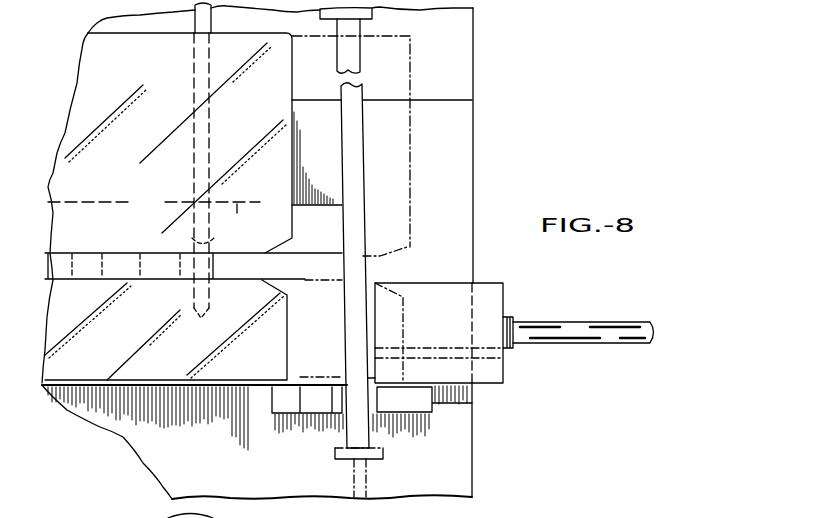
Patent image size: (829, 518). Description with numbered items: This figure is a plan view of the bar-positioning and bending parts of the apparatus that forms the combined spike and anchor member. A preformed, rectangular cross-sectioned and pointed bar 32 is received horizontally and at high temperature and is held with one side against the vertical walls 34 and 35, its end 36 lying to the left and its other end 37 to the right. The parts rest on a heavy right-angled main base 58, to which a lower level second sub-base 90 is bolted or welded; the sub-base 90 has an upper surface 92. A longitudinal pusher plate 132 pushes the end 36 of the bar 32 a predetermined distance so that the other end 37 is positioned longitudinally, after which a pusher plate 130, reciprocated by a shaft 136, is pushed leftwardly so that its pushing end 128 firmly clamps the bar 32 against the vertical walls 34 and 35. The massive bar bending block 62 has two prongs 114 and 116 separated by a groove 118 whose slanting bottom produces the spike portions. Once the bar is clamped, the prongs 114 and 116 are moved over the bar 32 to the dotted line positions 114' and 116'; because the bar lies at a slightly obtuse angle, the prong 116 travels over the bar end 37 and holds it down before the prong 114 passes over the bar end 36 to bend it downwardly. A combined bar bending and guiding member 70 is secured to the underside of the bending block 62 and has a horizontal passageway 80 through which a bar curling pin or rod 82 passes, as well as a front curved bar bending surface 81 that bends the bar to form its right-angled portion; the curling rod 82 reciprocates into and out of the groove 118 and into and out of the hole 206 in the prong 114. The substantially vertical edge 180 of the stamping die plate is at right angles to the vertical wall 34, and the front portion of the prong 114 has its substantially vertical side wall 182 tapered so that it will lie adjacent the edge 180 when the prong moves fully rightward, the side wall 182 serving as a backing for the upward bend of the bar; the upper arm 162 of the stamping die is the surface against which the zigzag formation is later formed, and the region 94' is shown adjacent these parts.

The main base 58 is at (477, 57).
The prong 116 is at (201, 143).
The dotted line position of prong 116 116' is at (376, 146).
The vertical wall 35 is at (342, 186).
The other end of bar 37 is at (352, 56).
The bar 32 is at (358, 243).
The vertical wall 34 is at (346, 350).
The end of bar 36 is at (350, 432).
The bar curling pin or rod 82 is at (202, 21).
The horizontal hole or passageway 80 is at (212, 83).
The hole in prong 114 206 is at (190, 298).
The front curved bar bending surface 81 is at (230, 228).
The combined bar bending and guiding member 70 is at (113, 200).
The groove 118 is at (121, 268).
The prong 114 is at (188, 330).
The dotted line position of prong 114 114' is at (380, 331).
The side wall of prong 114 182 is at (138, 380).
The pusher plate 130 is at (493, 310).
The pushing end of pusher plate 128 is at (375, 341).
The shaft 136 is at (588, 328).
The substantially vertical edge of stamping die plate 180 is at (315, 398).
The upper arm of stamping die 162 is at (282, 414).
The cavity region 94' is at (401, 434).
The bar bending block 62 is at (440, 404).
The longitudinal pusher plate 132 is at (335, 458).
The upper surface of second sub-base 92 is at (448, 473).
The lower level second sub-base 90 is at (472, 490).